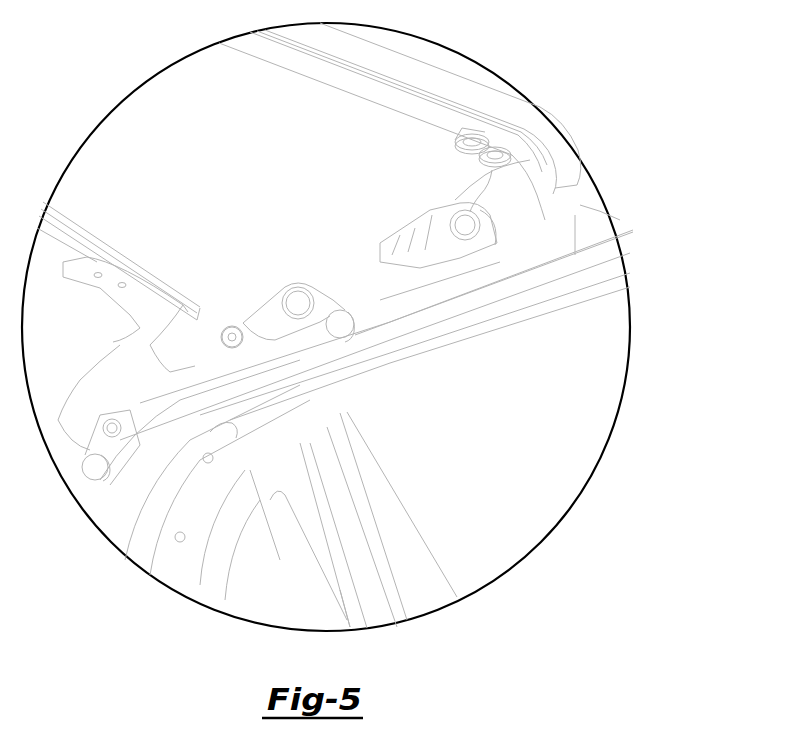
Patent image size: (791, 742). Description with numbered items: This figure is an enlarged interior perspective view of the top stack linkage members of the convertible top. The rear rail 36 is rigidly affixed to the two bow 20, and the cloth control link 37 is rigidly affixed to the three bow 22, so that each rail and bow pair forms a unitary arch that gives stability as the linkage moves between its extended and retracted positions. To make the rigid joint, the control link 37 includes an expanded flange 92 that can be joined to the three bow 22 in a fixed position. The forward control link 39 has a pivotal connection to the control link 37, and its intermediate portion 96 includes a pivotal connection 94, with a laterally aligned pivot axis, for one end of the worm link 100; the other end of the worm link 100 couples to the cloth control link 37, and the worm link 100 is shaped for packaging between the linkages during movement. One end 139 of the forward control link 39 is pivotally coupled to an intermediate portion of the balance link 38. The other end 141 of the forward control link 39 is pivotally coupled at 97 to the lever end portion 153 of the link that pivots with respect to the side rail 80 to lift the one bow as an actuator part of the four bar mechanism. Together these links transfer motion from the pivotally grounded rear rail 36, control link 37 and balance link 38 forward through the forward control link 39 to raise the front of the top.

The two bow 20 is at (422, 68).
The three bow 22 is at (71, 222).
The rear rail 36 is at (222, 528).
The cloth control link 37 is at (84, 389).
The balance link 38 is at (272, 312).
The forward control link 39 is at (317, 348).
The side rail 80 is at (333, 293).
The expanded flange 92 is at (100, 290).
The pivotal connection 94 is at (228, 332).
The intermediate portion of the forward control link 96 is at (250, 333).
The pivotal coupling 97 is at (343, 317).
The worm link 100 is at (222, 427).
The end of the forward control link 139 is at (128, 462).
The other end of the forward control link 141 is at (368, 337).
The lever end portion 153 is at (378, 292).